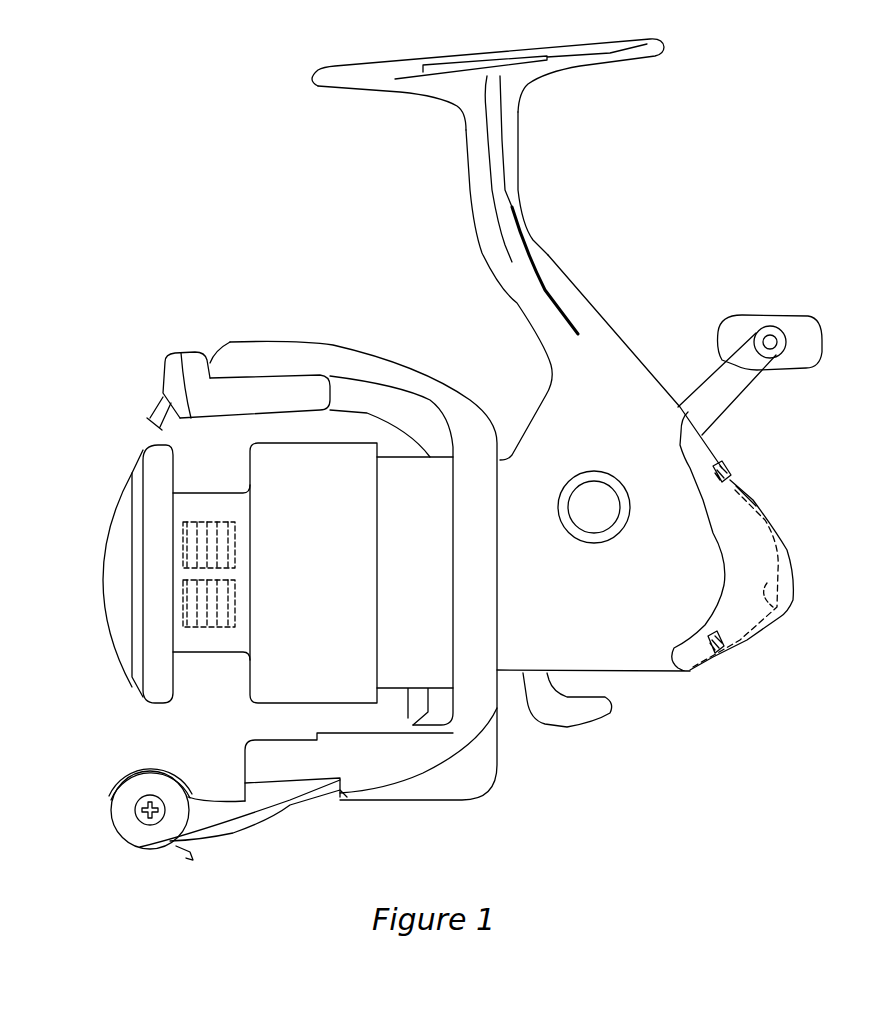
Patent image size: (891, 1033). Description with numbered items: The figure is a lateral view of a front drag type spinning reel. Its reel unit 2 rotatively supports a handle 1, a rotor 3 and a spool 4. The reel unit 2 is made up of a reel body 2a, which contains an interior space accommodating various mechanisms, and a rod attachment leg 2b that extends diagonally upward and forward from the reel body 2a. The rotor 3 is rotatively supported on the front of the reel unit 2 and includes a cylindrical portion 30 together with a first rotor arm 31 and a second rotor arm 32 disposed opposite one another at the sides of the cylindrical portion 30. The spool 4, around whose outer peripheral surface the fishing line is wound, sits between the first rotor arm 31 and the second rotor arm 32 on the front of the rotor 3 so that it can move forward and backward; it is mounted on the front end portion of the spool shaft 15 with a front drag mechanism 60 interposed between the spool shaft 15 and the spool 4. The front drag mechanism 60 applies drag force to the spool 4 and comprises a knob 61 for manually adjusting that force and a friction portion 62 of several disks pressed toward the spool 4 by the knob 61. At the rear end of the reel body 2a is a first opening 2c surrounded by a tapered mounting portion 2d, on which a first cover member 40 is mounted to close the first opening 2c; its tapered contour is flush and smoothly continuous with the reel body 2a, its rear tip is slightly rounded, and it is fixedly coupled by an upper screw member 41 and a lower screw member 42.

The handle 1 is at (805, 328).
The reel unit 2 is at (567, 200).
The reel body 2a is at (633, 378).
The rod attachment leg 2b is at (513, 157).
The first opening 2c is at (783, 613).
The mounting portion 2d is at (740, 483).
The rotor 3 is at (432, 390).
The spool 4 is at (333, 473).
The spool shaft 15 is at (183, 593).
The cylindrical portion 30 is at (410, 693).
The first rotor arm 31 is at (362, 365).
The second rotor arm 32 is at (357, 797).
The first cover member 40 is at (763, 567).
The screw member 41 is at (735, 466).
The screw member 42 is at (723, 657).
The front drag mechanism 60 is at (203, 625).
The knob 61 is at (110, 593).
The friction portion 62 is at (223, 627).